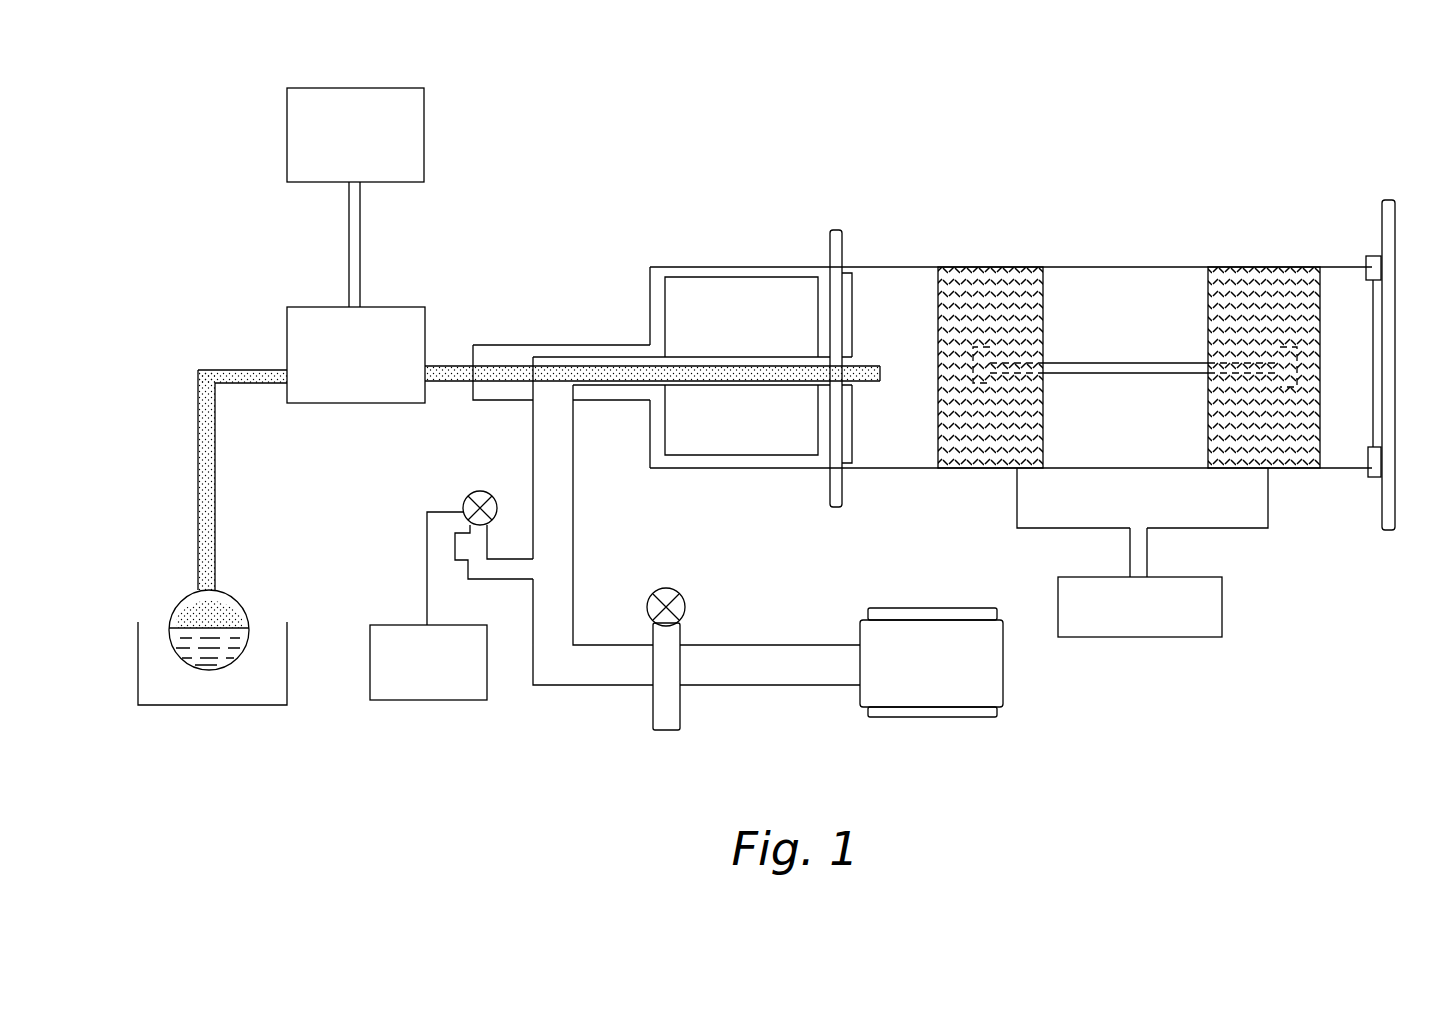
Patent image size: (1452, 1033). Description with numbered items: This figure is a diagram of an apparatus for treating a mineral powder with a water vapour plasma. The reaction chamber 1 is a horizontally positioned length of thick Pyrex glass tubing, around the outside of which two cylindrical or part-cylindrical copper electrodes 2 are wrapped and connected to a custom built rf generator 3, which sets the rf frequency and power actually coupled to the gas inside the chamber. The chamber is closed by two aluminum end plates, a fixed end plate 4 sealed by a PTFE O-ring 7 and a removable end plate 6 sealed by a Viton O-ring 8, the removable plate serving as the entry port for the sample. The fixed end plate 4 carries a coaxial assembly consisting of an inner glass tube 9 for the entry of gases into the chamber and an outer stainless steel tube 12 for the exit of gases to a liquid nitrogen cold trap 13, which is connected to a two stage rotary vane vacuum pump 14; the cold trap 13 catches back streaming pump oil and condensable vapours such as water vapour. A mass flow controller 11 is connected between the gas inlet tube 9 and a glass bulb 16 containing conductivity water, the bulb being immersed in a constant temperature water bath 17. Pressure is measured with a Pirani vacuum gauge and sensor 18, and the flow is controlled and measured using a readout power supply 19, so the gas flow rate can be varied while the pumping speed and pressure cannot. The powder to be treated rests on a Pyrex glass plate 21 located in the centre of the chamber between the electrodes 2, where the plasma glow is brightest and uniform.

The reaction chamber 1 is at (982, 266).
The copper electrodes 2 is at (1203, 266).
The rf generator 3 is at (1142, 552).
The fixed end plate 4 is at (830, 493).
The removable end plate 6 is at (1390, 263).
The PTFE O-ring 7 is at (853, 315).
The Viton O-ring 8 is at (1380, 432).
The inner glass tube 9 is at (878, 380).
The mass flow controller 11 is at (311, 449).
The outer stainless steel tube 12 is at (610, 670).
The liquid nitrogen cold trap 13 is at (668, 727).
The rotary vane vacuum pump 14 is at (931, 662).
The glass bulb 16 is at (185, 598).
The constant temperature water bath 17 is at (208, 708).
The Pirani vacuum gauge and sensor 18 is at (397, 625).
The readout power supply 19 is at (355, 197).
The Pyrex glass plate 21 is at (1167, 363).